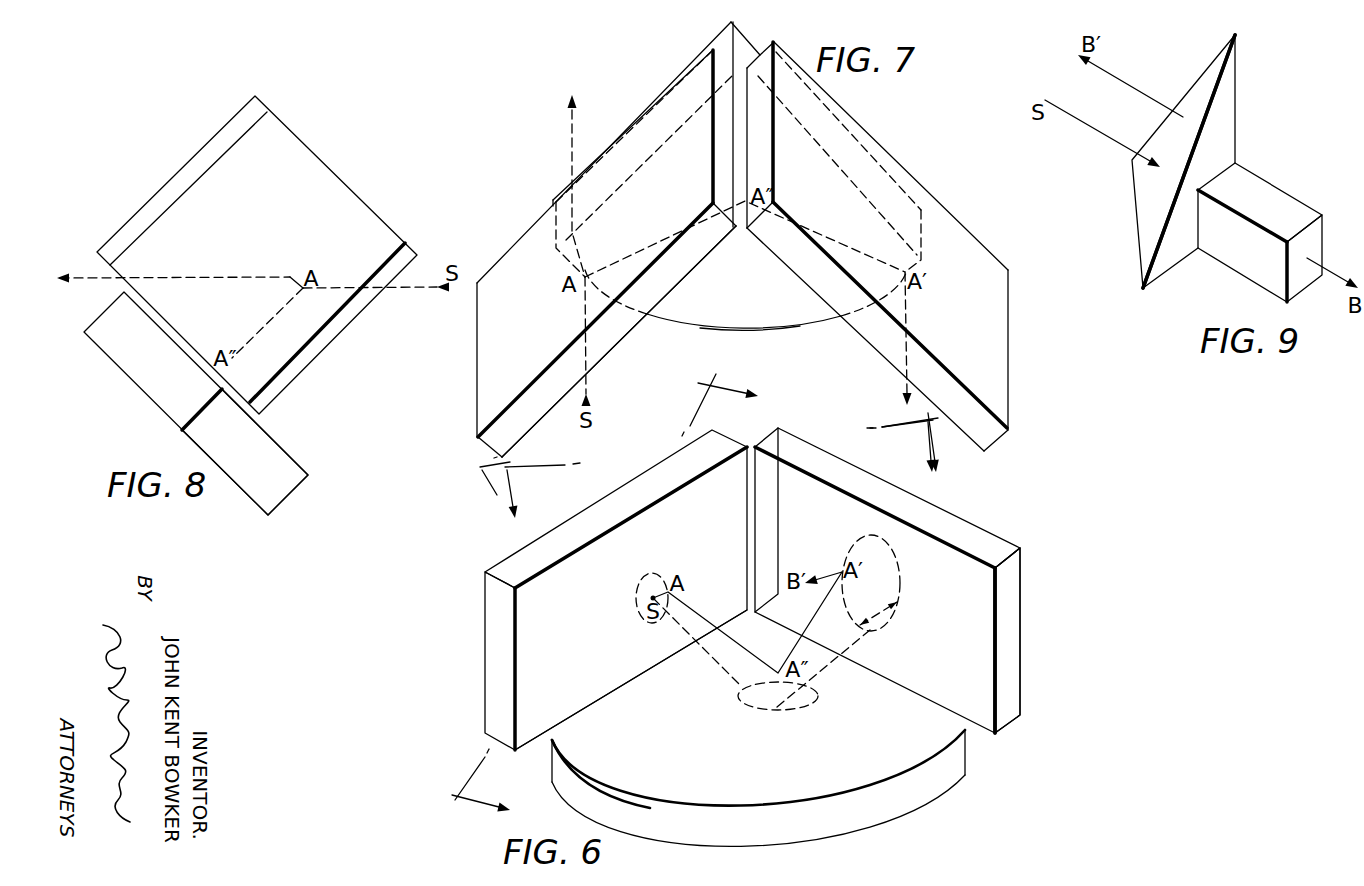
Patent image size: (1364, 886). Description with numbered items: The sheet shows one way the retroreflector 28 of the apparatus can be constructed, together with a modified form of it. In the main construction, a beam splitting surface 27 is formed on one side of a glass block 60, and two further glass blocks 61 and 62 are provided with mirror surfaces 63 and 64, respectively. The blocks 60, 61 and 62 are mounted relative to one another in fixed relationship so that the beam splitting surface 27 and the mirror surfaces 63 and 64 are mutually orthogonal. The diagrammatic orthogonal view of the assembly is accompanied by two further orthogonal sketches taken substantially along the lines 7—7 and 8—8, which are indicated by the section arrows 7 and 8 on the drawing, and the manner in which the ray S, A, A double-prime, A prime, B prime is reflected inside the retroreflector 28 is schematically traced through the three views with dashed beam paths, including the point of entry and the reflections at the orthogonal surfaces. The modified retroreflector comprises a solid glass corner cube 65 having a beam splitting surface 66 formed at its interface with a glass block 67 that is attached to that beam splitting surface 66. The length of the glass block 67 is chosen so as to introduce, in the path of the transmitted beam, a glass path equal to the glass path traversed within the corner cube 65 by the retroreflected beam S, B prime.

In FIG. 7, the beam splitting surface 27 is at (616, 350).
In FIG. 6, the beam splitting surface 27 is at (527, 683).
In FIG. 8, the retroreflector 28 is at (376, 300).
In FIG. 7, the retroreflector 28 is at (678, 329).
In FIG. 6, the retroreflector 28 is at (1040, 618).
In FIG. 8, the glass block 60 is at (308, 162).
In FIG. 7, the glass block 60 is at (480, 340).
In FIG. 6, the glass block 60 is at (497, 628).
In FIG. 8, the glass block 61 is at (190, 163).
In FIG. 7, the glass block 61 is at (1002, 332).
In FIG. 6, the glass block 61 is at (960, 530).
In FIG. 8, the glass block 62 is at (157, 397).
In FIG. 7, the glass block 62 is at (731, 328).
In FIG. 6, the glass block 62 is at (933, 778).
In FIG. 6, the mirror surface 63 is at (987, 680).
In FIG. 8, the mirror surface 64 is at (287, 450).
In FIG. 7, the mirror surface 64 is at (787, 312).
In FIG. 6, the mirror surface 64 is at (587, 750).
In FIG. 9, the solid glass corner cube 65 is at (1248, 92).
In FIG. 9, the beam splitting surface 66 is at (1220, 137).
In FIG. 9, the glass block 67 is at (1270, 190).
In FIG. 7, the section line 7- 7 is at (715, 454).
In FIG. 6, the section line 7- 7 is at (726, 476).
In FIG. 7, the section line 8- 8 is at (727, 405).
In FIG. 6, the section line 8- 8 is at (487, 787).